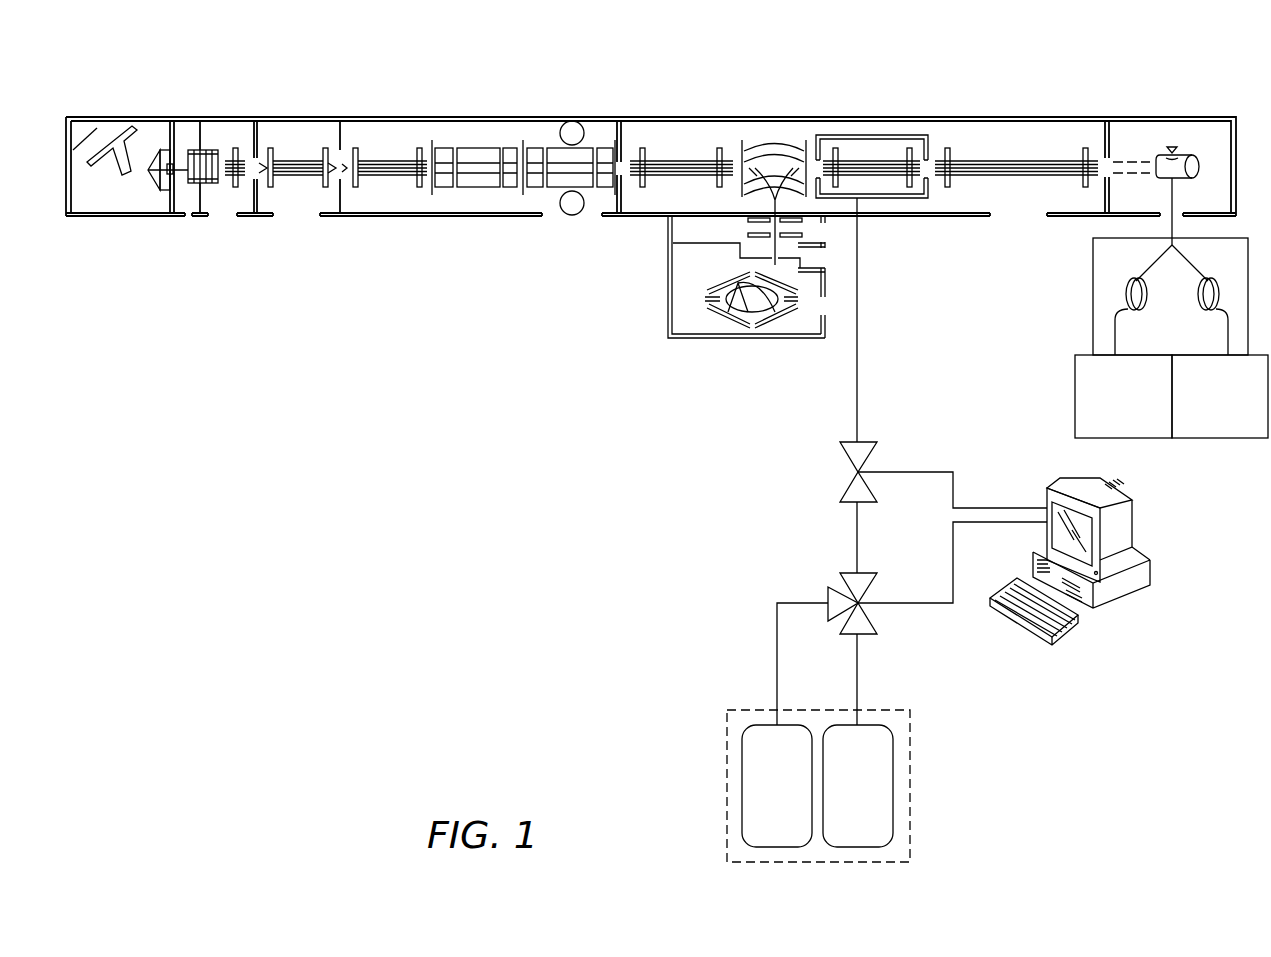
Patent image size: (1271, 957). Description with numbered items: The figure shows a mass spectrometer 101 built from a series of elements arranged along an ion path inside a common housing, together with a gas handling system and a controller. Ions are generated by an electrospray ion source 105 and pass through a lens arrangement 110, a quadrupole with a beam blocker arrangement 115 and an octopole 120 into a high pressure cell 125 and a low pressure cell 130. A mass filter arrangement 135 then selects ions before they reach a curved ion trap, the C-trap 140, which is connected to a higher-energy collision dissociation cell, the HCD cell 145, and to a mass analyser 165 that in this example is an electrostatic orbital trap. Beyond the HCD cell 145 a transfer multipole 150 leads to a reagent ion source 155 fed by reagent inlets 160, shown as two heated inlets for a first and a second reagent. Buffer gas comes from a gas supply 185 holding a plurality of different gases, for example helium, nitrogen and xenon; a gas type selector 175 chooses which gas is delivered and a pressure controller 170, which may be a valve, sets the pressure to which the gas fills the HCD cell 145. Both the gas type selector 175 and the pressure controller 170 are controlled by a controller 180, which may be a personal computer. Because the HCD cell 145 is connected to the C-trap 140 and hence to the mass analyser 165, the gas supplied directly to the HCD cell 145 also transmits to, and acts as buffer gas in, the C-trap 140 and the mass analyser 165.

The mass spectrometer 101 is at (418, 472).
The electrospray ion source 105 is at (107, 111).
The lens arrangement 110 is at (223, 111).
The quadrupole with a beam blocker arrangement 115 is at (297, 111).
The octopole 120 is at (387, 111).
The high pressure cell 125 is at (477, 111).
The low pressure cell 130 is at (568, 111).
The mass filter arrangement 135 is at (678, 111).
The curved ion trap (C-trap) 140 is at (773, 111).
The higher-energy collision dissociation (HCD) cell 145 is at (870, 111).
The transfer multipole 150 is at (1015, 111).
The reagent ion source 155 is at (1170, 111).
The reagent inlets 160 is at (1093, 288).
The mass analyser 165 is at (754, 350).
The pressure controller 170 is at (843, 455).
The gas type selector 175 is at (878, 626).
The controller 180 is at (1134, 509).
The gas supply 185 is at (910, 718).